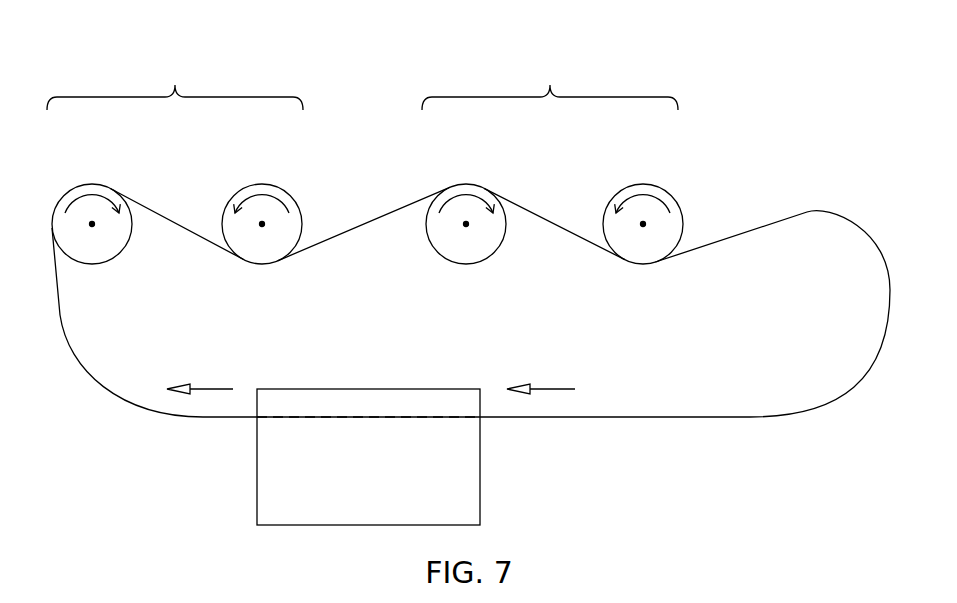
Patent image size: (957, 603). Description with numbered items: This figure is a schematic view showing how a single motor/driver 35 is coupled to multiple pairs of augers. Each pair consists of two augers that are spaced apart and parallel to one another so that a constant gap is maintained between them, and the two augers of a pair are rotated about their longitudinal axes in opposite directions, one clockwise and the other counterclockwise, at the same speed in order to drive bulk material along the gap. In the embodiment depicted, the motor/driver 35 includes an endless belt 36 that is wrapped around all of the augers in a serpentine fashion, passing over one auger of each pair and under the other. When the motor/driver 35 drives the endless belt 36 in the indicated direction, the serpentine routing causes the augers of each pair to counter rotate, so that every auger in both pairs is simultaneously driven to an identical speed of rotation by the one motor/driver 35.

The motor/driver 35 is at (480, 463).
The endless belt 36 is at (706, 417).